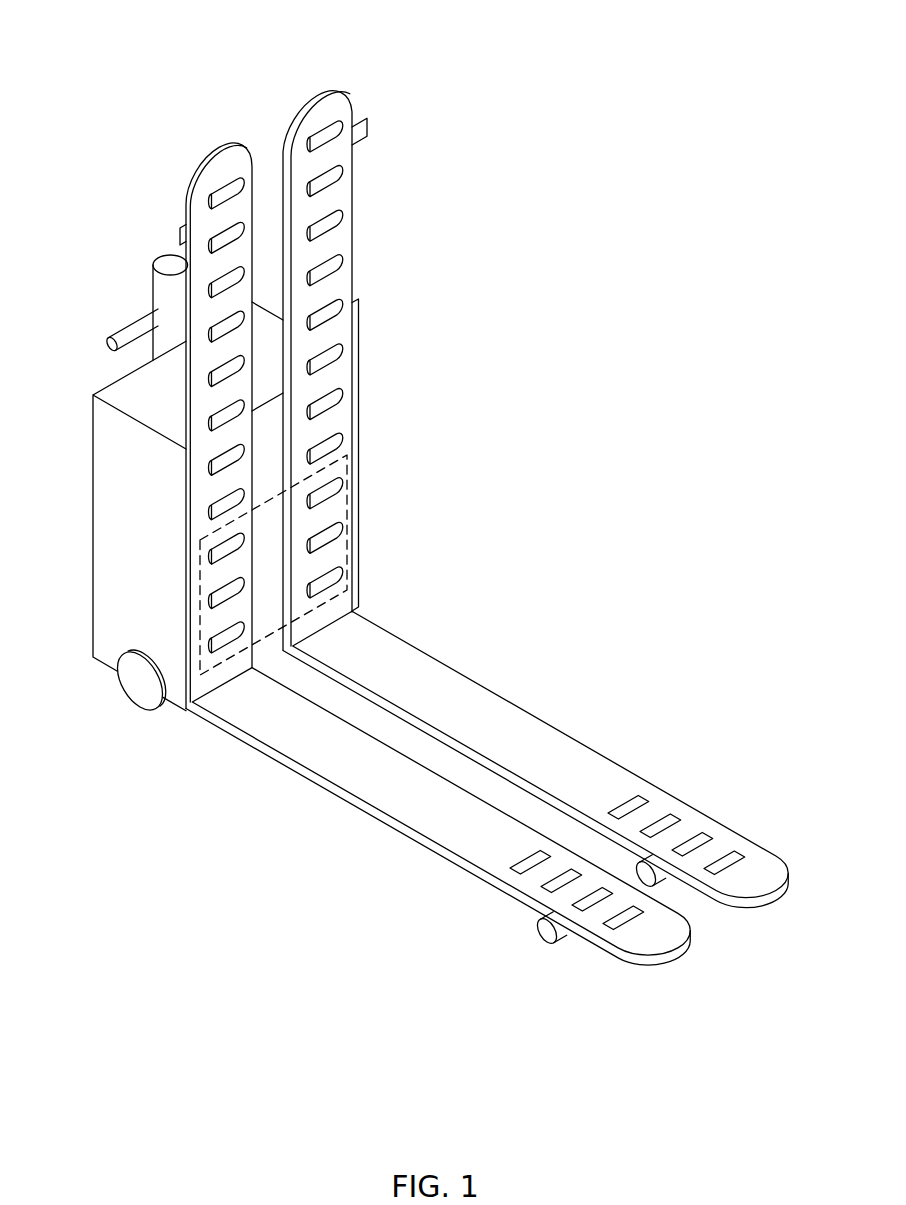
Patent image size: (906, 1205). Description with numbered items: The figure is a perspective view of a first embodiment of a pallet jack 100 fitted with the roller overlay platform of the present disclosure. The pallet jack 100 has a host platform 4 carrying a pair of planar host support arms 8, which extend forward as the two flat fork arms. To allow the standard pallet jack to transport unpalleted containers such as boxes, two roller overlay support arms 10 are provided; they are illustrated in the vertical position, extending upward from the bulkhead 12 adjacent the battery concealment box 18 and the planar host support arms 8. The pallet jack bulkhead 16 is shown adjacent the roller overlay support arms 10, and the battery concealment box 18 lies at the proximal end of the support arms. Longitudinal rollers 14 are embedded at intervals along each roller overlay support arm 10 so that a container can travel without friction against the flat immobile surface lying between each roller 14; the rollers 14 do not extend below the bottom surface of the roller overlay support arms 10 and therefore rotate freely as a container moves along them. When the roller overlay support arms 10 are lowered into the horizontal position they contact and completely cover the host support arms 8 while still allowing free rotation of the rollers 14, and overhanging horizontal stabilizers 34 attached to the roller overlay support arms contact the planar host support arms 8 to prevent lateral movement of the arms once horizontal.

The pallet jack 100 is at (413, 494).
The roller overlay support arms 10 is at (275, 366).
The rollers 14 is at (350, 208).
The pallet jack bulkhead 16 is at (357, 433).
The bulkhead 12 is at (342, 587).
The overhanging horizontal stabilizers 34 is at (180, 233).
The battery concealment box 18 is at (93, 458).
The host platform 4 is at (487, 785).
The planar host support arms 8 is at (621, 764).